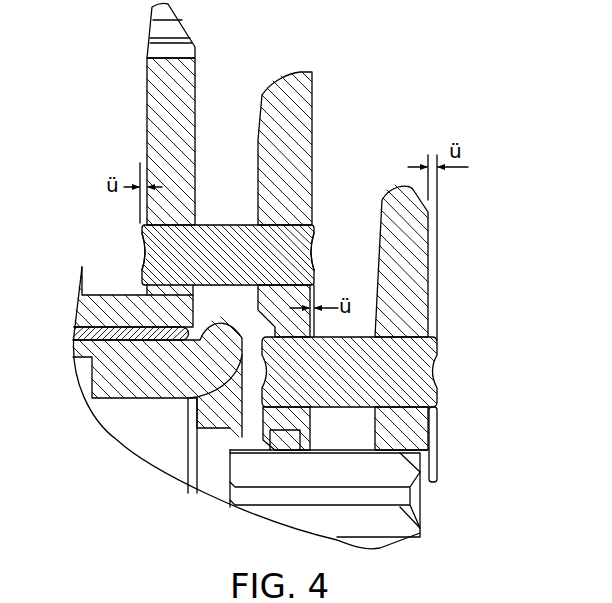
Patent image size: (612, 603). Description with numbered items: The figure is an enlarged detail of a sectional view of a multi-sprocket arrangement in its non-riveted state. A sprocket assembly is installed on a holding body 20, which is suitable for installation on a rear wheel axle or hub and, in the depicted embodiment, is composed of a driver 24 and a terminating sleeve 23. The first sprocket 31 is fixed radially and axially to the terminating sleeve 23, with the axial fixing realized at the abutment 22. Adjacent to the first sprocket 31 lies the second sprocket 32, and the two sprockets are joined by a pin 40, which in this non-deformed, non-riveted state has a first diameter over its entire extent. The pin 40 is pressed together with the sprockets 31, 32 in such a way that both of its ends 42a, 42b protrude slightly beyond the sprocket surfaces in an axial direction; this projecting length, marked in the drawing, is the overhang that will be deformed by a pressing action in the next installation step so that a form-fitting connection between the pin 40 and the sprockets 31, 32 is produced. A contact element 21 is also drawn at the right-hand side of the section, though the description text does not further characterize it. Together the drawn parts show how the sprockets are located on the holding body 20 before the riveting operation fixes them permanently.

The holding body 20 is at (54, 344).
The contact element 21 is at (397, 475).
The abutment 22 is at (202, 318).
The terminating sleeve 23 is at (88, 348).
The driver 24 is at (175, 445).
The first sprocket 31 is at (147, 70).
The second sprocket 32 is at (262, 95).
The pin 40 is at (230, 225).
The first end of pin 42a is at (141, 252).
The second end of pin 42b is at (316, 248).